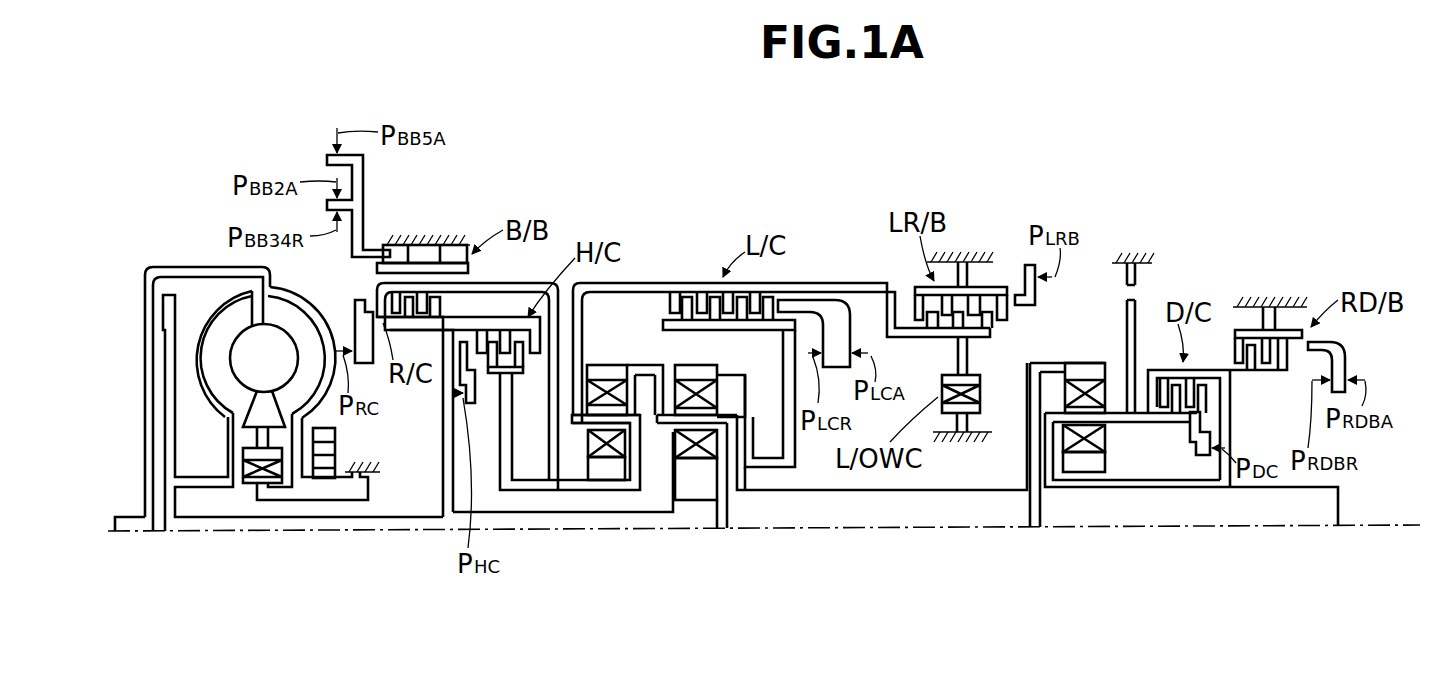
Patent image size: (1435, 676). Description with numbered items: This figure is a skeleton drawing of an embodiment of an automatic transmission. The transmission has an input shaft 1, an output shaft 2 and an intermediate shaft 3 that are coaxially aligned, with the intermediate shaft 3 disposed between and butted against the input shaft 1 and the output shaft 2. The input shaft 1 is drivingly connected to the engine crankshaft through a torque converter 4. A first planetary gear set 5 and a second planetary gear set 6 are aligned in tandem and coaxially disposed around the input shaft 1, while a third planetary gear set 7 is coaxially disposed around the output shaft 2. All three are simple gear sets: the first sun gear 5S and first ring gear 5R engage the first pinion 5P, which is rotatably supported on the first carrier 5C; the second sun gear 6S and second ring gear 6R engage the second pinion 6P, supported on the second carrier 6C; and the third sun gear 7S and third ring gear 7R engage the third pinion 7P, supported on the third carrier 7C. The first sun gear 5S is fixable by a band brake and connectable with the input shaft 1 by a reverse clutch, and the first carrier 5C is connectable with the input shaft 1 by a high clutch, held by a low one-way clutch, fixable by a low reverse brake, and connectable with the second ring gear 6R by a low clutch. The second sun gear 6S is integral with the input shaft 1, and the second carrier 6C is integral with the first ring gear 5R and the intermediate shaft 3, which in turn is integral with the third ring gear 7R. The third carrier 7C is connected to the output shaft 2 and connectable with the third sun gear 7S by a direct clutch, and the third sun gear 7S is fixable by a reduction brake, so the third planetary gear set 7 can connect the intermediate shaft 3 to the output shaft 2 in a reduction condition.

The input shaft 1 is at (318, 524).
The output shaft 2 is at (1230, 508).
The intermediate shaft 3 is at (848, 519).
The torque converter 4 is at (190, 257).
The first planetary gear set 5 is at (590, 432).
The first ring gear 5R is at (620, 370).
The first carrier 5C is at (570, 421).
The first pinion 5P is at (588, 432).
The first sun gear 5S is at (602, 514).
The second planetary gear set 6 is at (718, 451).
The second ring gear 6R is at (690, 373).
The second pinion 6P is at (719, 413).
The second carrier 6C is at (747, 427).
The second sun gear 6S is at (670, 436).
The third planetary gear set 7 is at (1092, 419).
The third ring gear 7R is at (1068, 364).
The third carrier 7C is at (1050, 420).
The third pinion 7P is at (1108, 428).
The third sun gear 7S is at (1084, 519).